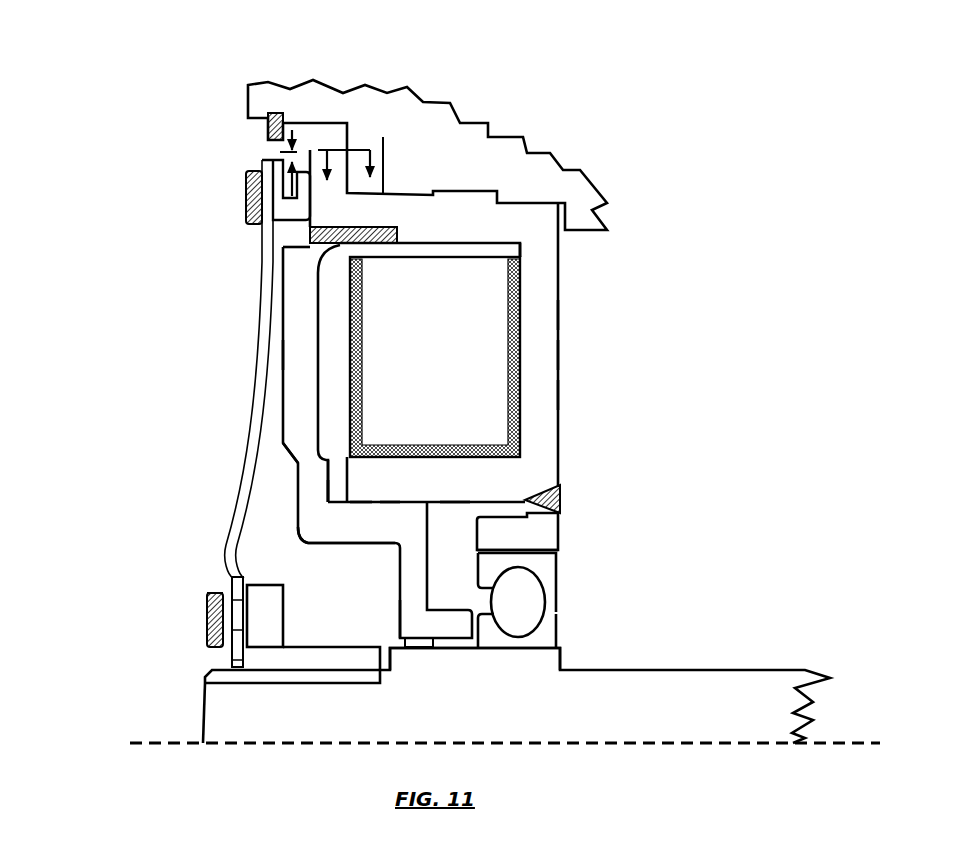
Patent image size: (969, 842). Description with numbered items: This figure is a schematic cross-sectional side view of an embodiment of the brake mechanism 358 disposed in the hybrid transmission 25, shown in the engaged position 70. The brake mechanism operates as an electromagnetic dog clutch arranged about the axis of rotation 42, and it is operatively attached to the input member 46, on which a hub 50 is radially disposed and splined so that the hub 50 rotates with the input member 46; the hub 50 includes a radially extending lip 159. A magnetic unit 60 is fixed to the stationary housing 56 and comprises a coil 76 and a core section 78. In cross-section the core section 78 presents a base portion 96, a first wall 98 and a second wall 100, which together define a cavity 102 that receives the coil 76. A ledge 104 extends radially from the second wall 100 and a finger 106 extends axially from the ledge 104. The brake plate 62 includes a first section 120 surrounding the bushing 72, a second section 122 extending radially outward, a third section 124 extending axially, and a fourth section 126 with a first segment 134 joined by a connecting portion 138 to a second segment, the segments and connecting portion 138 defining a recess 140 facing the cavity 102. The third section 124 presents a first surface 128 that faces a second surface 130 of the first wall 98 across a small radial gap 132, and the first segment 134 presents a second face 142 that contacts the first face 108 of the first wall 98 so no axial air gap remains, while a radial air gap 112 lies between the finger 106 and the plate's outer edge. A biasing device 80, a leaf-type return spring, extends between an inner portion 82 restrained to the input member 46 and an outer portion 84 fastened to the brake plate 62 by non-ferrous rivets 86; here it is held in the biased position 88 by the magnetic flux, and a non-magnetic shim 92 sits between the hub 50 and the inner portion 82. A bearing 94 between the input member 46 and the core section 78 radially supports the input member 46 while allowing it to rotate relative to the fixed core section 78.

The hybrid transmission 25 is at (233, 112).
The brake mechanism 358 is at (231, 146).
The engaged position 70 is at (207, 182).
The rivets 86 is at (268, 199).
The outer portion 84 is at (268, 222).
The biased position 88 is at (247, 303).
The brake plate 62 is at (300, 325).
The connecting portion 138 is at (300, 355).
The biasing device 80 is at (258, 380).
The recess 140 is at (330, 393).
The fourth section 126 is at (297, 447).
The first segment 134 is at (326, 492).
The first face 108 is at (308, 537).
The shim 92 is at (232, 580).
The inner portion 82 is at (227, 597).
The hub 50 is at (257, 647).
The axis of rotation 42 is at (136, 743).
The input member 46 is at (217, 703).
The housing 56 is at (322, 100).
The radial air gap 112 is at (281, 117).
The finger 106 is at (320, 150).
The ledge 104 is at (340, 145).
The second wall 100 is at (463, 220).
The cavity 102 is at (507, 255).
The magnetic unit 60 is at (558, 313).
The core section 78 is at (558, 358).
The base portion 96 is at (558, 398).
The coil 76 is at (435, 357).
The second face 142 is at (334, 474).
The first surface 128 is at (393, 498).
The first wall 98 is at (446, 494).
The small radial gap 132 is at (392, 508).
The second section 122 is at (414, 592).
The bearing 94 is at (533, 604).
The third section 124 is at (322, 538).
The second surface 130 is at (362, 508).
The lip 159 is at (278, 593).
The bushing 72 is at (427, 647).
The first section 120 is at (432, 628).